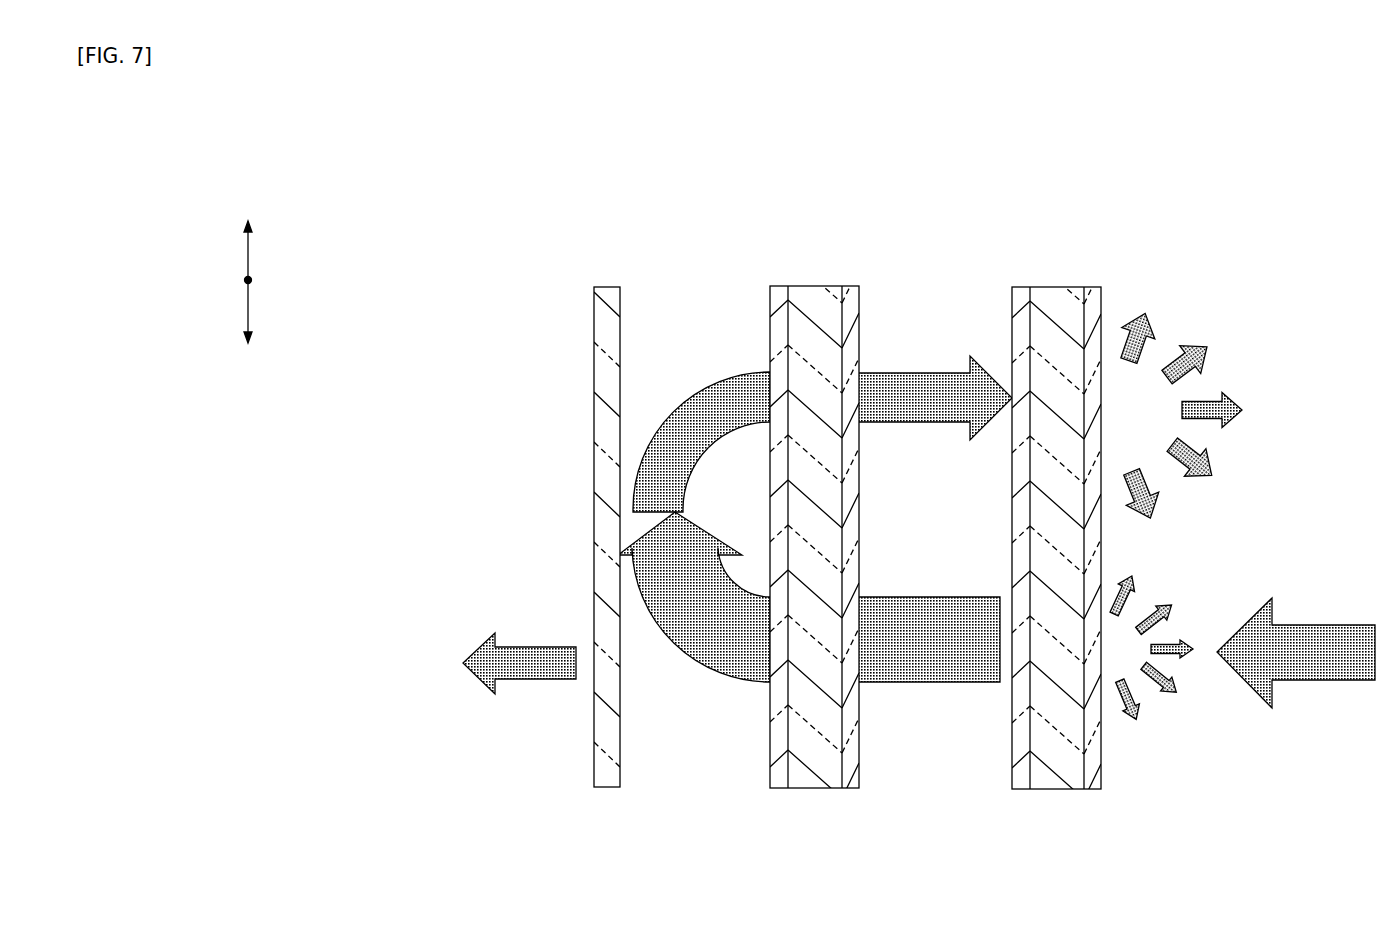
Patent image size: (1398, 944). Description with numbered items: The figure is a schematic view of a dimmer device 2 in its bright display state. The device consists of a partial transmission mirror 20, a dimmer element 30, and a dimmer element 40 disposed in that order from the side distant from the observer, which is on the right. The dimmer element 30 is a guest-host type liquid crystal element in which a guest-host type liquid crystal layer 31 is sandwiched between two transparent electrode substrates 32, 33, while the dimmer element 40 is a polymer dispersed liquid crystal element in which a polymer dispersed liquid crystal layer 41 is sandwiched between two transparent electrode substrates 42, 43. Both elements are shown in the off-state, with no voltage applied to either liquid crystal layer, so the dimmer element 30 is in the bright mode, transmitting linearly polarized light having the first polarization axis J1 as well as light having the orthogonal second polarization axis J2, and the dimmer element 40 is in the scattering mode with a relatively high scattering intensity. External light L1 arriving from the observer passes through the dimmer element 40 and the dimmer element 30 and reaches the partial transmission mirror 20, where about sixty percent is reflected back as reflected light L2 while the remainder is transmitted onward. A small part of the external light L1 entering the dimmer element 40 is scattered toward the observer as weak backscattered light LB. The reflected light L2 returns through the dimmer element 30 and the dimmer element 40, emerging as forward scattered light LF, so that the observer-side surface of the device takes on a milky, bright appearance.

The dimmer device 2 is at (963, 518).
The partial transmission mirror 20 is at (603, 290).
The dimmer element 30 is at (806, 522).
The guest-host type liquid crystal layer 31 is at (818, 300).
The transparent electrode substrate 32 is at (772, 287).
The transparent electrode substrate 33 is at (848, 525).
The dimmer element 40 is at (1050, 518).
The polymer dispersed liquid crystal layer 41 is at (1057, 533).
The transparent electrode substrate 42 is at (1015, 507).
The transparent electrode substrate 43 is at (1087, 521).
The first polarization axis J1 is at (246, 267).
The second polarization axis J2 is at (268, 288).
The external light L1 is at (503, 668).
The reflected light L2 is at (717, 417).
The forward scattered light LF is at (1190, 416).
The backscattered light LB is at (1149, 672).